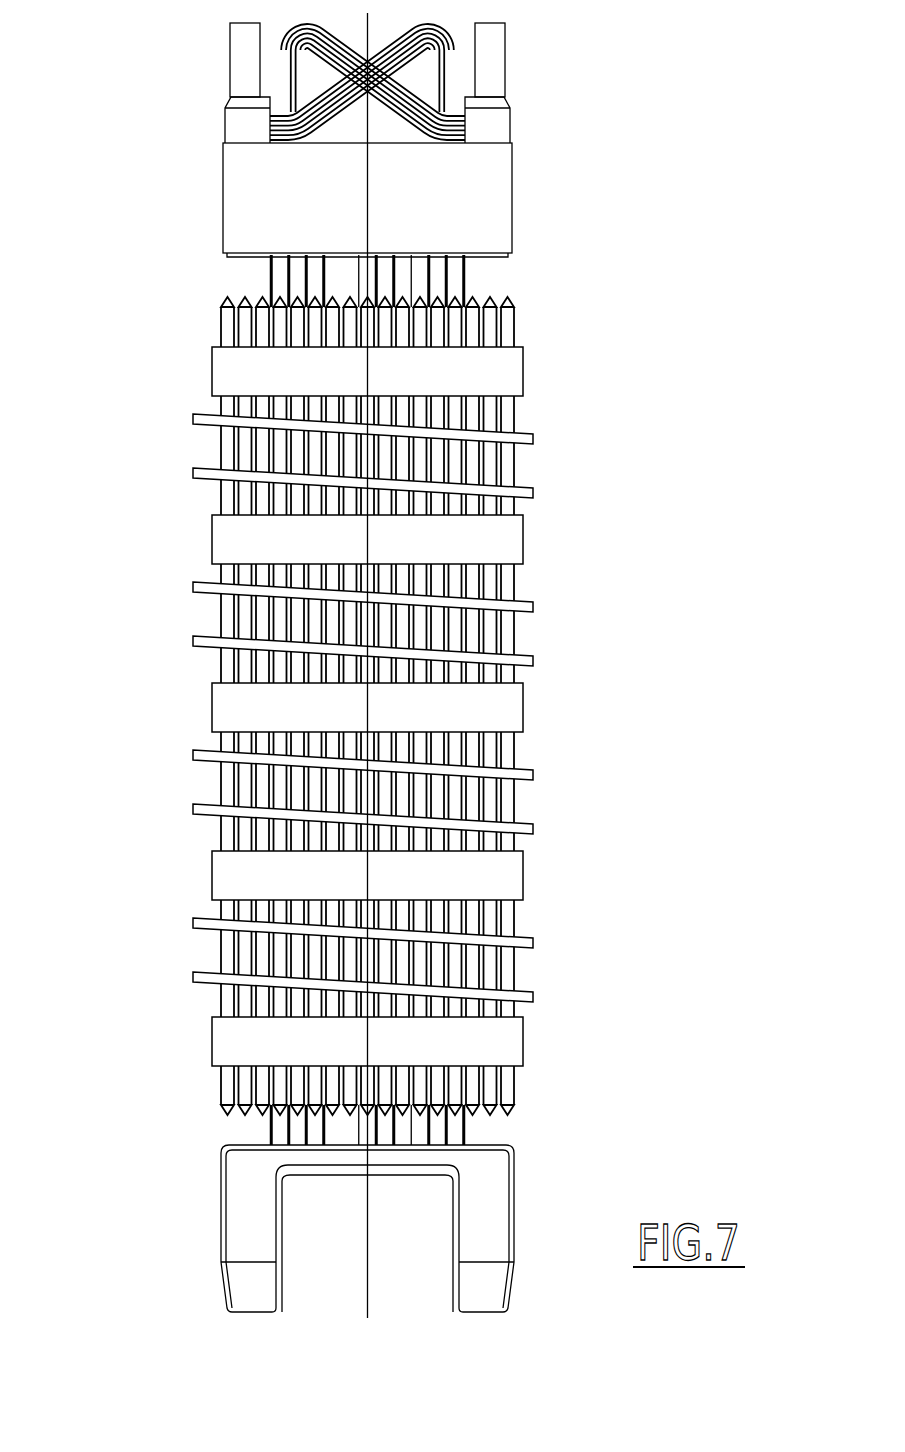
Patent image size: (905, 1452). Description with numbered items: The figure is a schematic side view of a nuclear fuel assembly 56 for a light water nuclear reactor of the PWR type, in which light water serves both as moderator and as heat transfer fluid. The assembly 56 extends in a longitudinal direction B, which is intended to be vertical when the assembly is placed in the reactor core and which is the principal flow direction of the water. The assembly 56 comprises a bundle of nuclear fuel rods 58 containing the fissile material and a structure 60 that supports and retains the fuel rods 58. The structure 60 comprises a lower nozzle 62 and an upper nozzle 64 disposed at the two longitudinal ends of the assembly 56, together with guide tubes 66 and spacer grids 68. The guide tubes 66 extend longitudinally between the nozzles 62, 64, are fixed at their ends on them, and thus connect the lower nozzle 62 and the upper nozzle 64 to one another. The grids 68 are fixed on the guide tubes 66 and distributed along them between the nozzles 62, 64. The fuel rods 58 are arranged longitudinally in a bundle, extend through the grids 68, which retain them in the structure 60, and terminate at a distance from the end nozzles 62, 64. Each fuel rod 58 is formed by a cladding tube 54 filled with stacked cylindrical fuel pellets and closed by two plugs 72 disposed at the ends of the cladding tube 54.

The nuclear fuel assembly 56 is at (84, 163).
The structure 60 is at (228, 276).
The upper nozzle 64 is at (483, 213).
The lower nozzle 62 is at (483, 1220).
The guide tubes 66 is at (453, 270).
The spacer grids 68 is at (458, 374).
The plugs 72 is at (499, 300).
The nuclear fuel rods 58 is at (505, 336).
The cladding tube 54 is at (240, 413).
The longitudinal direction B is at (370, 38).